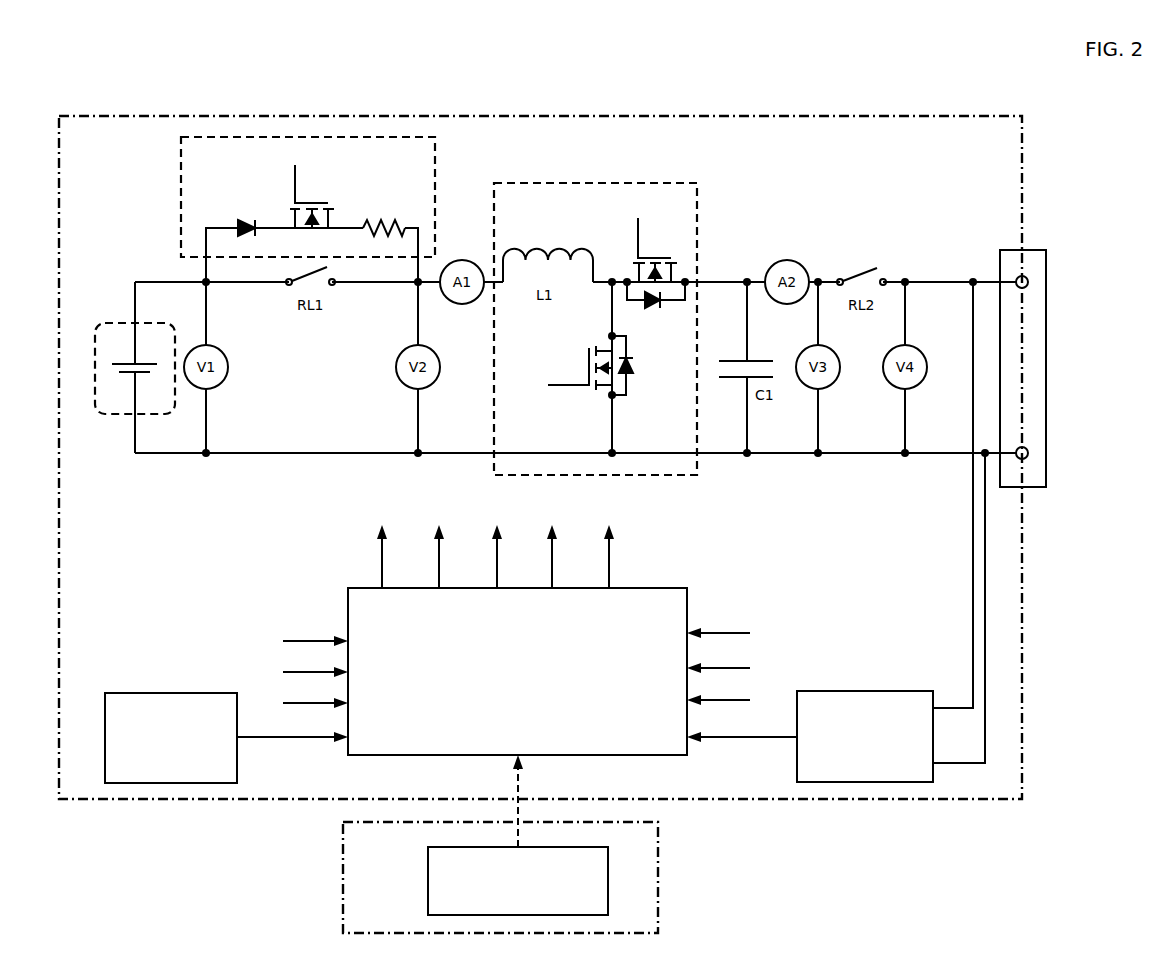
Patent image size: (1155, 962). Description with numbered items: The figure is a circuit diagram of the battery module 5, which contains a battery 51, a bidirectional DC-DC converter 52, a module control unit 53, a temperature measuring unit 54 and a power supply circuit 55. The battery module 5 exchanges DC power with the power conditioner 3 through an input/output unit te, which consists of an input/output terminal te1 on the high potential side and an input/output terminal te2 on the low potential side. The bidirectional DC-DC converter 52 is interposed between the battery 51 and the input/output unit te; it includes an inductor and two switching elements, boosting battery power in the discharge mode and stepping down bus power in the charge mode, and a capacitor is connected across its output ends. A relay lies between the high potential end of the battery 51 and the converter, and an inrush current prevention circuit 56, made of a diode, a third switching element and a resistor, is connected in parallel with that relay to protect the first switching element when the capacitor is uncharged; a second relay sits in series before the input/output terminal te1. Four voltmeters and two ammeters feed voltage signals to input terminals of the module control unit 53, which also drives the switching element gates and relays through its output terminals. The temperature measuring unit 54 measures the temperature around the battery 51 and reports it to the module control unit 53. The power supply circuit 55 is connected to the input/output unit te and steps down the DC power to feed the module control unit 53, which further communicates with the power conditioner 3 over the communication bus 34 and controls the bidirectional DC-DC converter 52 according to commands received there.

The battery module 5 is at (1010, 116).
The battery 51 is at (116, 323).
The bidirectional DC-DC converter 52 is at (698, 226).
The module control unit 53 is at (346, 758).
The temperature measuring unit 54 is at (150, 693).
The power supply circuit 55 is at (898, 691).
The inrush current prevention circuit 56 is at (436, 206).
The power conditioner 3 is at (520, 850).
The communication bus 34 is at (428, 878).
The input/output unit te is at (1042, 250).
The input/output terminal on high potential side te1 is at (1028, 287).
The input/output terminal on low potential side te2 is at (1029, 449).